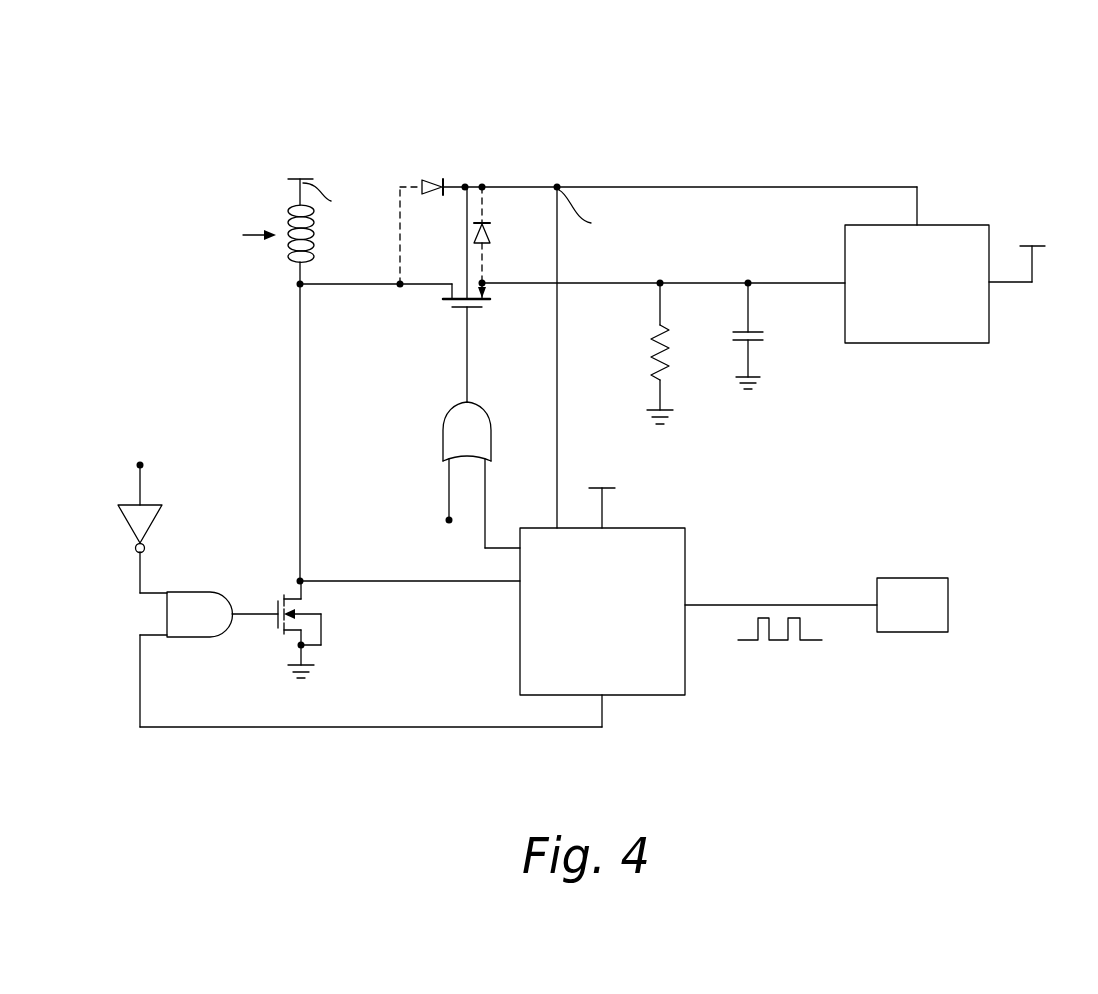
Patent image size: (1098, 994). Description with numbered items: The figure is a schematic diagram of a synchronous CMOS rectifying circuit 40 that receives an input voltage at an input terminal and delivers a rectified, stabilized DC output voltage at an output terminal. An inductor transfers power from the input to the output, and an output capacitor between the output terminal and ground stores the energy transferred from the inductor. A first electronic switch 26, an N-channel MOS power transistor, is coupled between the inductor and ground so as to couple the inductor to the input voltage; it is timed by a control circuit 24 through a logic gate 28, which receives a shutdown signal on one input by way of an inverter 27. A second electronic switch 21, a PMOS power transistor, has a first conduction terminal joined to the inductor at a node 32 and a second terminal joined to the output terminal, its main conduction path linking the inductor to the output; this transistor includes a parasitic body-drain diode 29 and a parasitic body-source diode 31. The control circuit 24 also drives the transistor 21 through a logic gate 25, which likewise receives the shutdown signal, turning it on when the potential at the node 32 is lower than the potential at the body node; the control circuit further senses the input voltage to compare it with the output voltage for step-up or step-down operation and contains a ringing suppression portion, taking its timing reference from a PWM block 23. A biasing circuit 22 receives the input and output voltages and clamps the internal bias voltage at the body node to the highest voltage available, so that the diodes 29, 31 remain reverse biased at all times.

The rectifying circuit 40 is at (999, 130).
The parasitic body-drain diode 29 is at (436, 180).
The parasitic body-source diode 31 is at (489, 234).
The second electronic switch 21 is at (450, 298).
The node 32 is at (299, 288).
The biasing circuit 22 is at (990, 322).
The logic gate 25 is at (441, 440).
The control circuit 24 is at (686, 543).
The PWM circuit 23 is at (949, 603).
The first electronic switch 26 is at (293, 596).
The inverter 27 is at (149, 506).
The logic gate 28 is at (188, 638).